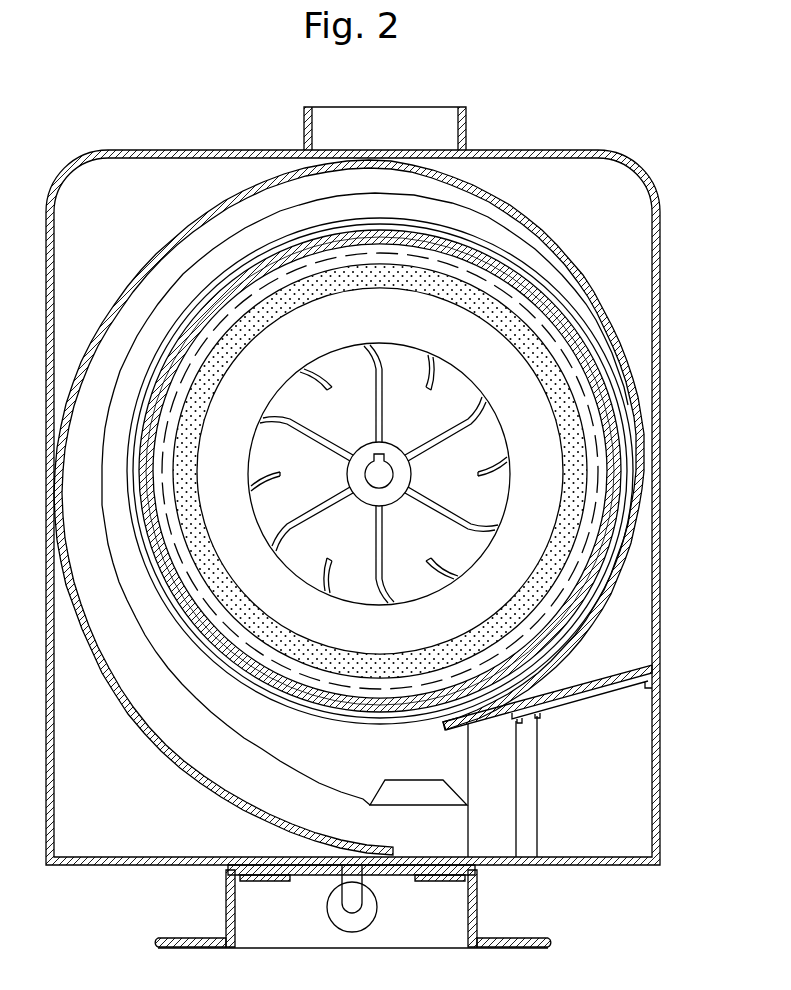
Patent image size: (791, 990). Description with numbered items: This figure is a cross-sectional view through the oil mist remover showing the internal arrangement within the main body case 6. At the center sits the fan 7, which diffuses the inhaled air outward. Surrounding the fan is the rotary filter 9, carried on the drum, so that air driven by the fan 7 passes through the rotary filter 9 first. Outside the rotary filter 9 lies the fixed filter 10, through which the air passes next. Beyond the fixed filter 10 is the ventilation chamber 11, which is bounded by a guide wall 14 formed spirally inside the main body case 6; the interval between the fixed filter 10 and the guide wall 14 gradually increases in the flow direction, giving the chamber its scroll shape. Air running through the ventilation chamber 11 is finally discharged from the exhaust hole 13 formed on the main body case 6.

The main body case 6 is at (566, 150).
The fan 7 is at (412, 347).
The rotary filter 9 is at (558, 571).
The fixed filter 10 is at (565, 622).
The ventilation chamber 11 is at (217, 223).
The exhaust hole 13 is at (436, 107).
The guide wall 14 is at (260, 188).